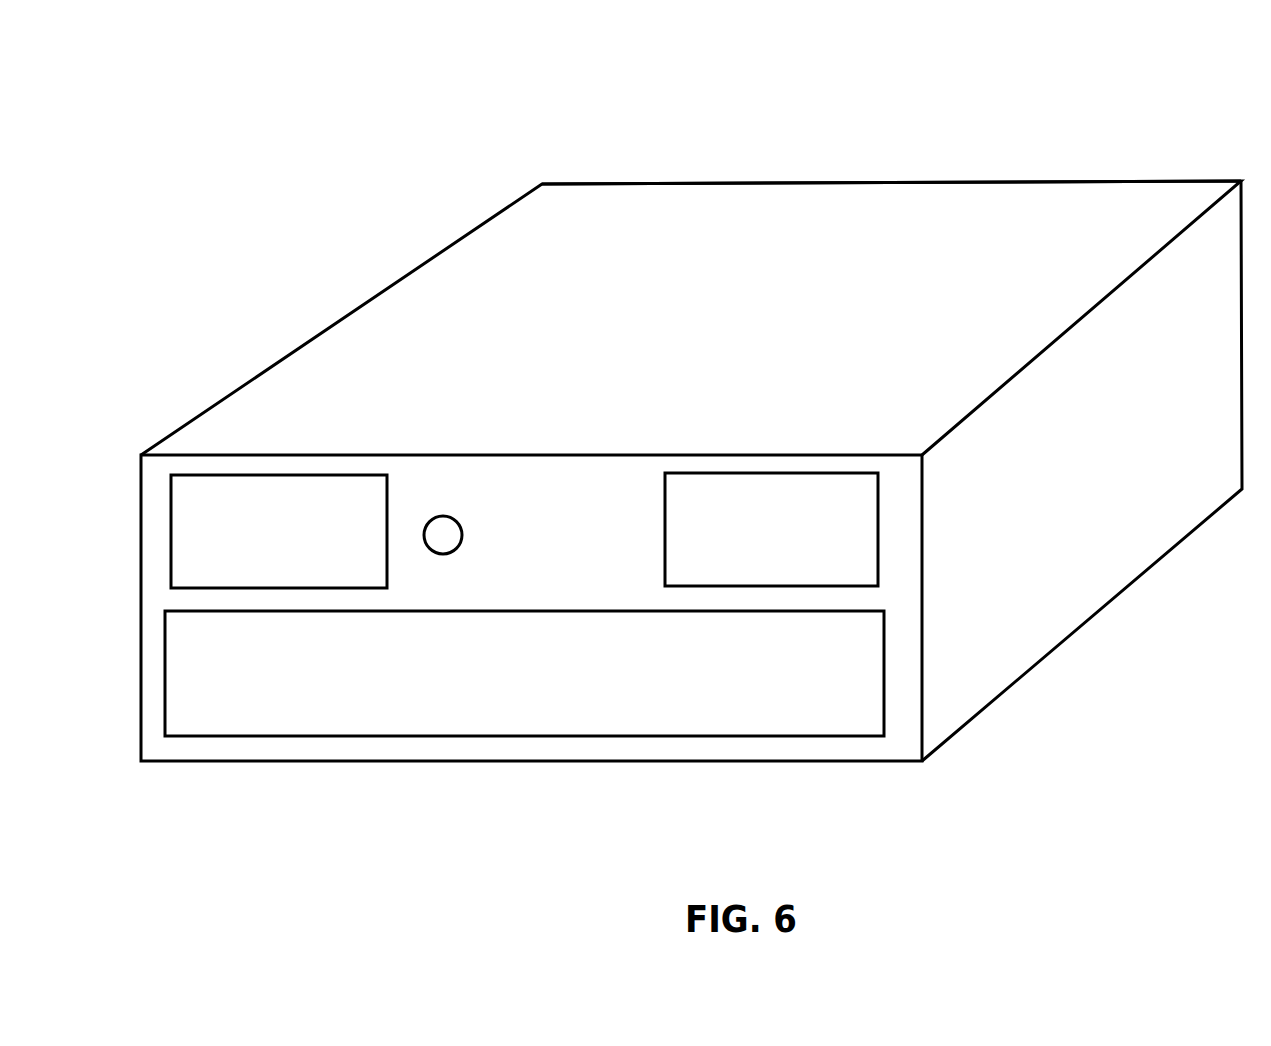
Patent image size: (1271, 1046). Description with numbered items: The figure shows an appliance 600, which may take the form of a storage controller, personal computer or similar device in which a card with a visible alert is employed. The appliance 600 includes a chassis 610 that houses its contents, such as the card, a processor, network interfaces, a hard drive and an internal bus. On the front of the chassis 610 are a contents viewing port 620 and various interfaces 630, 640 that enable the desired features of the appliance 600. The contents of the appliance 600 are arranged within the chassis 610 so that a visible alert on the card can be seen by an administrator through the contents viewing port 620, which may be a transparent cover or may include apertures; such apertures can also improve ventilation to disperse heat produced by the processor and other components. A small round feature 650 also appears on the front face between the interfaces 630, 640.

The computing device housing 600 is at (426, 110).
The top surface 610 is at (958, 182).
The lower slot 620 is at (524, 735).
The left port 630 is at (171, 532).
The right port 640 is at (878, 528).
The button 650 is at (464, 535).